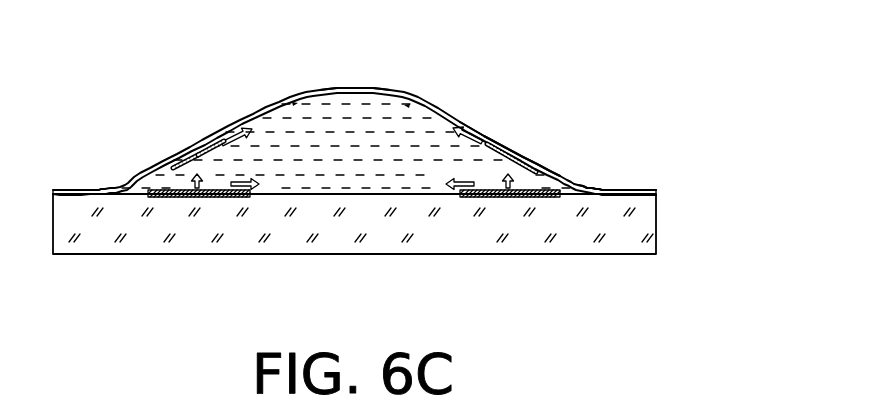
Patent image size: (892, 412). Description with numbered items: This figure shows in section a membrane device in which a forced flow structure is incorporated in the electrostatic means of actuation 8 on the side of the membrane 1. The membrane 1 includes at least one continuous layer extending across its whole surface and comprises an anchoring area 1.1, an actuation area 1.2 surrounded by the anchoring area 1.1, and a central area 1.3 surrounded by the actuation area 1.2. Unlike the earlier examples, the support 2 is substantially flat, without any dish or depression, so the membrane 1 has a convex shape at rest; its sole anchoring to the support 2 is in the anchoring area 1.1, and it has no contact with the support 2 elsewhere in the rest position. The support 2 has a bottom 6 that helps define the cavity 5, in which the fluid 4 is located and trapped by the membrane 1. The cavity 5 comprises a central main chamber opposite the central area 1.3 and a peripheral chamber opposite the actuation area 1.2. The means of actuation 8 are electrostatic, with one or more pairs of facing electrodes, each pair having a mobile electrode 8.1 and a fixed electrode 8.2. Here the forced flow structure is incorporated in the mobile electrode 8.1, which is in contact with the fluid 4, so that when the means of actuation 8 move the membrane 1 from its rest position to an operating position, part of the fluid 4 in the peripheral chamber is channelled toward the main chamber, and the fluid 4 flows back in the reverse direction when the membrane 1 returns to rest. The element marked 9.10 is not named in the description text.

The membrane 1 is at (330, 92).
The anchoring area 1.1 is at (637, 191).
The actuation area 1.2 is at (541, 166).
The central area 1.3 is at (374, 92).
The support 2 is at (637, 220).
The fluid 4 is at (383, 184).
The cavity 5 is at (339, 176).
The bottom 6 is at (442, 198).
The means of actuation 8 is at (118, 298).
The mobile electrode 8.1 is at (178, 168).
The fixed electrode 8.2 is at (199, 197).
The actuator layer 9.10 is at (193, 151).